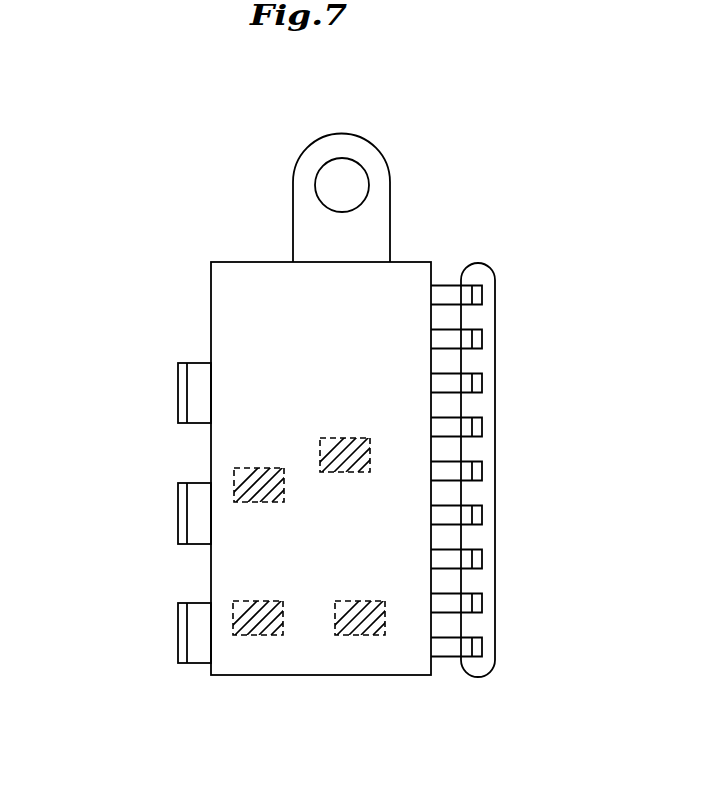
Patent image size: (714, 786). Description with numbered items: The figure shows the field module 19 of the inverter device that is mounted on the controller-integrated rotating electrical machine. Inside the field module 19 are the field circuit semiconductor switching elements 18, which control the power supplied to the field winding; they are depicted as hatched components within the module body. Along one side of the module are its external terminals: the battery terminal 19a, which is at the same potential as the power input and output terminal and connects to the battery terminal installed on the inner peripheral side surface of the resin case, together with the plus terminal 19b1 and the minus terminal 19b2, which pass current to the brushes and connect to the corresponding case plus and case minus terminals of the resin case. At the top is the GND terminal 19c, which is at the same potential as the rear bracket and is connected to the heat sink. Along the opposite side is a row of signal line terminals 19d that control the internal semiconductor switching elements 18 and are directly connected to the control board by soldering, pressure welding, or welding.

The field circuit semiconductor switching element 18 is at (330, 455).
The field module 19 is at (237, 330).
The battery terminal 19a is at (200, 636).
The plus terminal 19b1 is at (202, 397).
The minus terminal 19b2 is at (202, 508).
The GND terminal 19c is at (364, 157).
The signal line terminal 19d is at (484, 263).